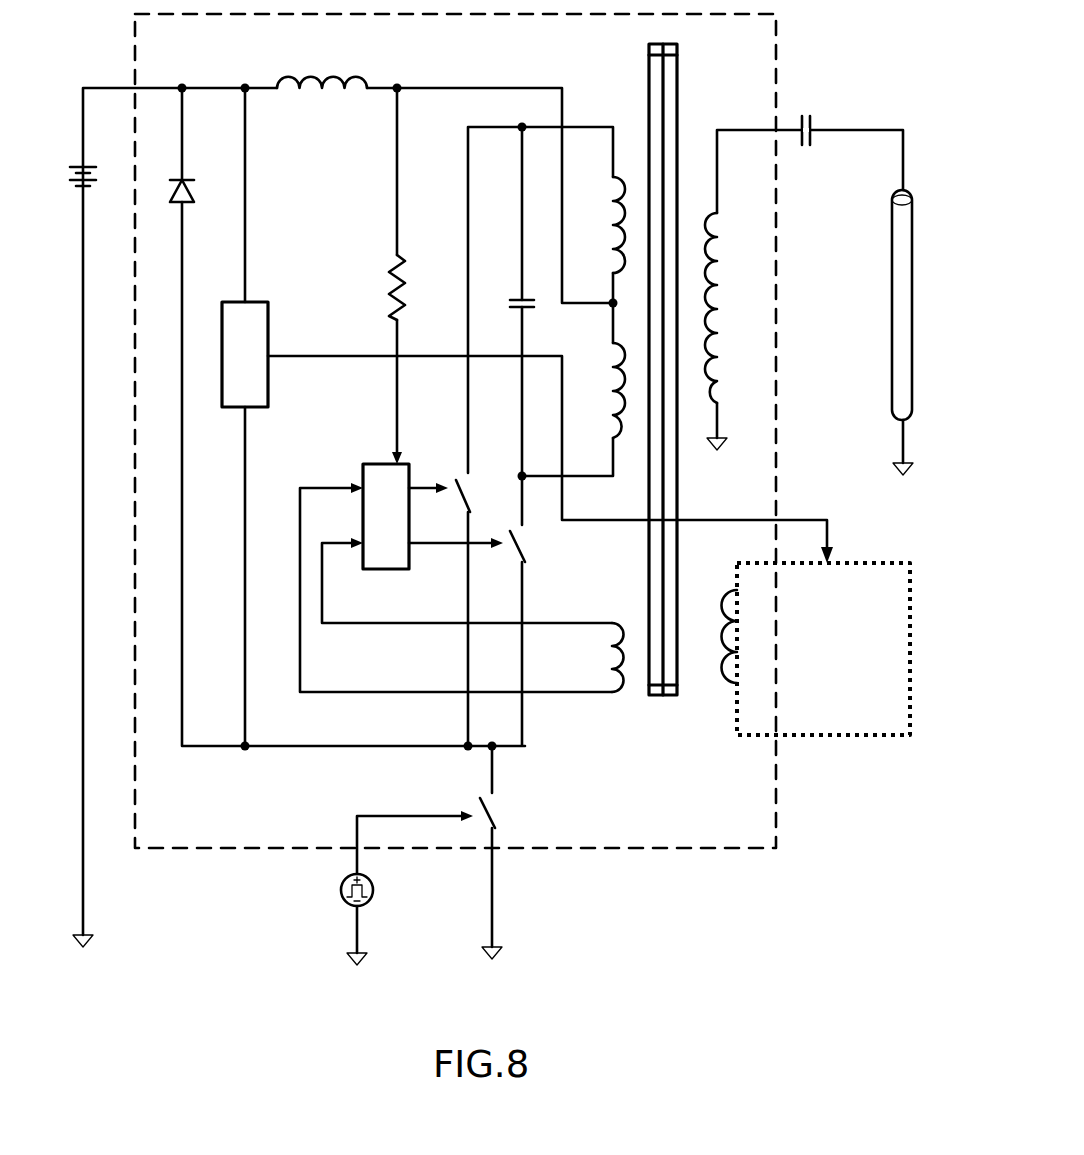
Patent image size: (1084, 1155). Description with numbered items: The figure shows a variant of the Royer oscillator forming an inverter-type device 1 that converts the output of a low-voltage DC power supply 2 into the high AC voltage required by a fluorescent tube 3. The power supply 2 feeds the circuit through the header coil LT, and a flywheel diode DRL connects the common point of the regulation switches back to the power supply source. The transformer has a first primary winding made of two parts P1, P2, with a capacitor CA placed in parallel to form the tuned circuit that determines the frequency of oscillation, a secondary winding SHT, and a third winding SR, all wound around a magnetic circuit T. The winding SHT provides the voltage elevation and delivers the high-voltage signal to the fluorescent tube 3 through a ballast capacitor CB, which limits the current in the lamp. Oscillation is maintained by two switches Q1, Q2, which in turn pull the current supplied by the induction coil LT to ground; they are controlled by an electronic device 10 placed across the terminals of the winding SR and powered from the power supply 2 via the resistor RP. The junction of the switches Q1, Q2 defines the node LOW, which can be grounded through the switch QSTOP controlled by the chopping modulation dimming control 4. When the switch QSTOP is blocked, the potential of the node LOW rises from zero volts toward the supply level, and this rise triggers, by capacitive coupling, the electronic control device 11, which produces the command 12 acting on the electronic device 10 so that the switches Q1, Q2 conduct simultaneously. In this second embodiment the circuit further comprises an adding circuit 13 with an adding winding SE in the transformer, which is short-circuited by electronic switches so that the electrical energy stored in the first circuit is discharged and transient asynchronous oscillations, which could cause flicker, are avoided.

The device of the inverter type 1 is at (568, 985).
The low-voltage DC power supply 2 is at (98, 175).
The fluorescent tube 3 is at (900, 315).
The dimming control 4 is at (338, 889).
The electronic device 10 is at (385, 478).
The electronic control device 11 is at (233, 393).
The command 12 is at (752, 520).
The adding circuit 13 is at (883, 713).
The flywheel diode DRL is at (192, 192).
The header coil LT is at (318, 97).
The resistor RP is at (388, 296).
The capacitor CA is at (511, 302).
The first part of the primary winding P1 is at (610, 231).
The second part of the primary winding P2 is at (612, 400).
The switch Q1 is at (462, 473).
The switch Q2 is at (528, 543).
The third winding SR is at (612, 660).
The magnetic circuit T is at (665, 697).
The secondary winding SHT is at (718, 333).
The ballast capacitor CB is at (813, 118).
The adding winding SE is at (730, 635).
The node LOW is at (465, 750).
The switch QSTOP is at (498, 812).